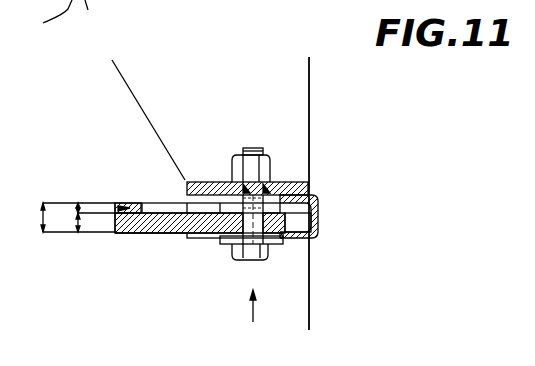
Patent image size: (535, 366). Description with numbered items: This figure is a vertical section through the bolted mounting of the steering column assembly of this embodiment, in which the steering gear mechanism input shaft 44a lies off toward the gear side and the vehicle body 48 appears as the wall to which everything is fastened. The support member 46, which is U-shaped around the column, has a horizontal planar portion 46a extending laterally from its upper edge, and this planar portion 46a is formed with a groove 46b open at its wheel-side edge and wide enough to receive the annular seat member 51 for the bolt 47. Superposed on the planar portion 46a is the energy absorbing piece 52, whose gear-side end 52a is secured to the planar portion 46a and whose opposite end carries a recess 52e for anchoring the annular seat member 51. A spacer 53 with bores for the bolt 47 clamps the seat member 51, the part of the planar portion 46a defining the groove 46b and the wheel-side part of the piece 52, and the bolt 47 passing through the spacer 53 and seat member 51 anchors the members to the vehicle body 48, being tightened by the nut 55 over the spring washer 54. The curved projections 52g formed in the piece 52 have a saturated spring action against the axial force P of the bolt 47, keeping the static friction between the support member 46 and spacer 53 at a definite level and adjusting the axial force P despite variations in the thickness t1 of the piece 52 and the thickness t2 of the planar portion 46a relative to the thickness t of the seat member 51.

The input shaft 44a is at (79, 15).
The vehicle body 48 is at (307, 92).
The support member 46 is at (150, 234).
The planar portion 46a is at (114, 234).
The groove 46b is at (302, 222).
The bolt 47 is at (250, 259).
The annular seat member 51 is at (222, 244).
The energy absorbing piece 52 is at (162, 203).
The end of absorbing piece 52a is at (127, 204).
The recess 52e is at (291, 244).
The curved projection 52g is at (238, 184).
The spacer 53 is at (313, 196).
The spring washer 54 is at (268, 186).
The nut 55 is at (266, 153).
The axial force P is at (252, 318).
The thickness of annular seat member t is at (41, 221).
The thickness of absorbing piece t1 is at (76, 208).
The thickness of planar portion t2 is at (76, 229).